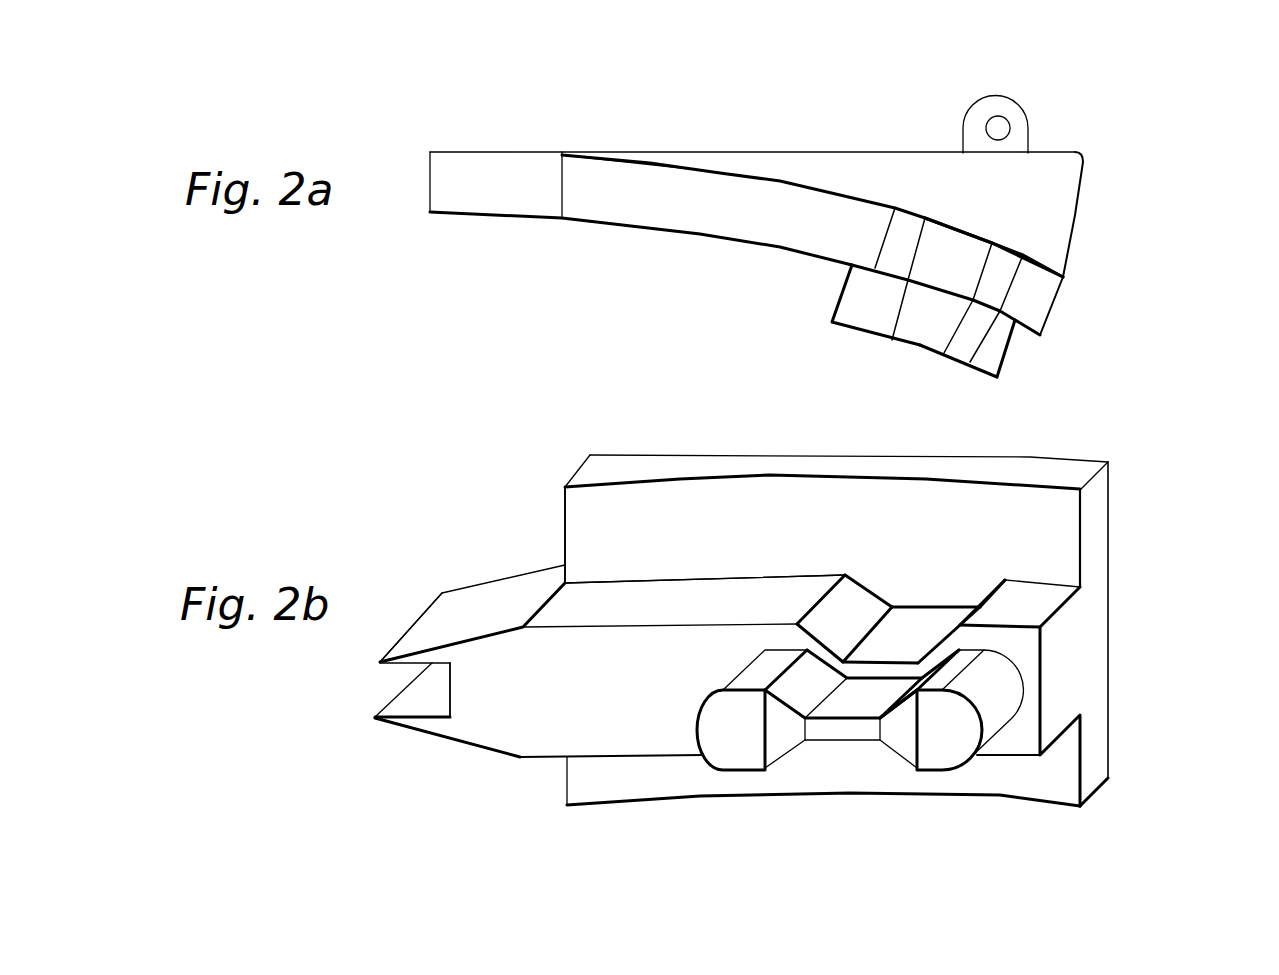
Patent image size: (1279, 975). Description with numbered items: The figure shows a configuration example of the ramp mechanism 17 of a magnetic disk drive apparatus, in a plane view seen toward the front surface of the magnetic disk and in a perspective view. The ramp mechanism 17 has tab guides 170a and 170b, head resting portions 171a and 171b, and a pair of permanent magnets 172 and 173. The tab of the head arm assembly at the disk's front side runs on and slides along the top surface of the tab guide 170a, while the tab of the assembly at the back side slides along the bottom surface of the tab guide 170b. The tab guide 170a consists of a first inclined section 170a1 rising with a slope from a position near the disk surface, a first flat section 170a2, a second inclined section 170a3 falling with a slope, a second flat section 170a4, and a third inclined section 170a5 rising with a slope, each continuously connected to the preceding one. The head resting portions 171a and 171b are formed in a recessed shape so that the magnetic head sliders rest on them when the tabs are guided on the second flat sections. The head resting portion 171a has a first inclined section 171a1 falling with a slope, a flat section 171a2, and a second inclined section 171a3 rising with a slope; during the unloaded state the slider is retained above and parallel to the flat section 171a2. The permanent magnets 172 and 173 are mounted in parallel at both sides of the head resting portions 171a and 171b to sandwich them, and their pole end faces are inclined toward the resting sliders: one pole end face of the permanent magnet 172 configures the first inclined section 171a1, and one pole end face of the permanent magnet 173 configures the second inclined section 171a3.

In FIG. 2a, the ramp mechanism 17 is at (1125, 150).
In FIG. 2b, the ramp mechanism 17 is at (1165, 460).
In FIG. 2a, the tab guide 170a is at (1120, 90).
In FIG. 2b, the tab guide 170a is at (592, 603).
In FIG. 2b, the tab guide 170b is at (452, 740).
In FIG. 2a, the first inclined section 170a1 is at (515, 168).
In FIG. 2b, the first inclined section 170a1 is at (485, 606).
In FIG. 2a, the first flat section 170a2 is at (686, 190).
In FIG. 2b, the first flat section 170a2 is at (673, 597).
In FIG. 2a, the second inclined section 170a3 is at (907, 222).
In FIG. 2b, the second inclined section 170a3 is at (860, 607).
In FIG. 2a, the second flat section 170a4 is at (960, 243).
In FIG. 2b, the second flat section 170a4 is at (933, 618).
In FIG. 2a, the third inclined section 170a5 is at (1007, 260).
In FIG. 2b, the third inclined section 170a5 is at (990, 598).
In FIG. 2a, the head resting portion 171a is at (923, 328).
In FIG. 2b, the head resting portion 171a is at (840, 697).
In FIG. 2b, the first inclined section 171a1 is at (795, 690).
In FIG. 2b, the flat section 171a2 is at (867, 703).
In FIG. 2b, the second inclined section 171a3 is at (913, 686).
In FIG. 2b, the head resting portion 171b is at (840, 758).
In FIG. 2a, the permanent magnet 172 is at (880, 322).
In FIG. 2b, the permanent magnet 172 is at (787, 740).
In FIG. 2a, the permanent magnet 173 is at (957, 352).
In FIG. 2b, the permanent magnet 173 is at (895, 735).